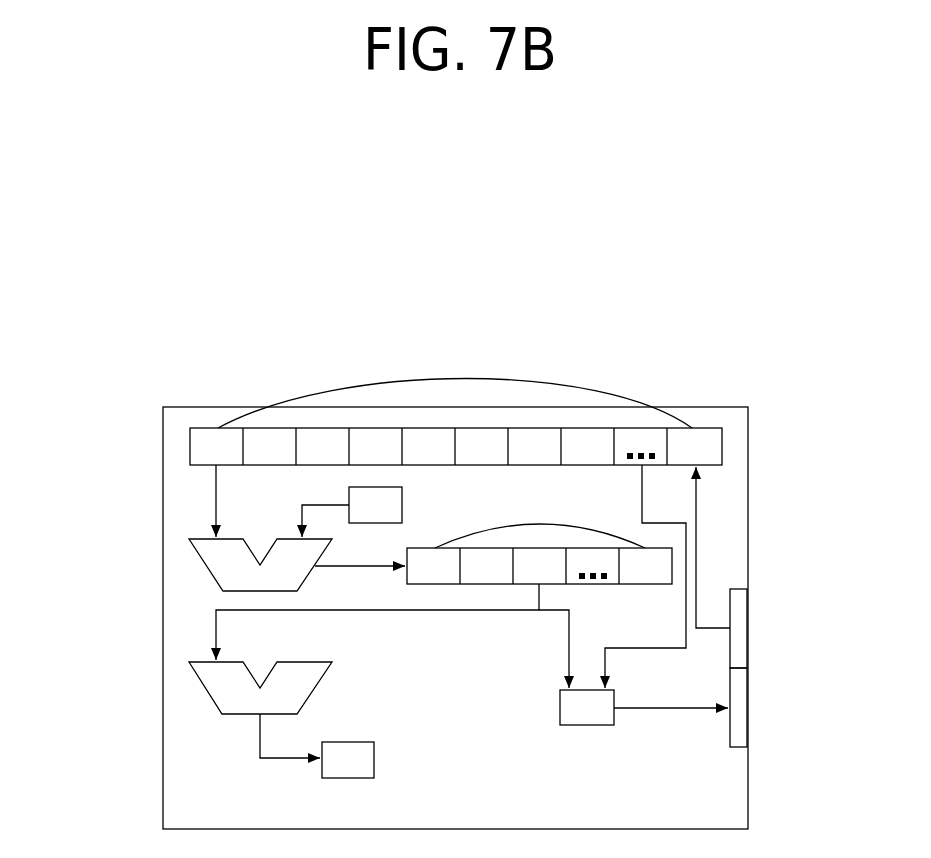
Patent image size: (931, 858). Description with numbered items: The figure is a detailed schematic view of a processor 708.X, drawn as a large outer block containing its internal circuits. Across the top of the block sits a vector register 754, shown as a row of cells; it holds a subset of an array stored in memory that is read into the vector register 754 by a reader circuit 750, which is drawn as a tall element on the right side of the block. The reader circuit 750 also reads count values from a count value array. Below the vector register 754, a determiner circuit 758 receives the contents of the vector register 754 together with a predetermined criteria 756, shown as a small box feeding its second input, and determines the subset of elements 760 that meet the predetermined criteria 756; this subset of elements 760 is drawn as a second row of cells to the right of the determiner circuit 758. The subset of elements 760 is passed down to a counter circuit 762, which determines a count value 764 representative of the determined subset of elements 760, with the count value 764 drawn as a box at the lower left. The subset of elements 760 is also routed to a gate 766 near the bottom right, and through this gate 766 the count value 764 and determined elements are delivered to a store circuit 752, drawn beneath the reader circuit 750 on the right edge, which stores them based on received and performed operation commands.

The processor 708.X is at (163, 618).
The vector register 754 is at (465, 380).
The predetermined criteria 756 is at (440, 494).
The determiner circuit 758 is at (297, 595).
The subset of elements 760 is at (525, 524).
The counter circuit 762 is at (315, 688).
The count value 764 is at (374, 760).
The gate 766 is at (593, 725).
The reader circuit 750 is at (748, 628).
The store circuit 752 is at (748, 698).